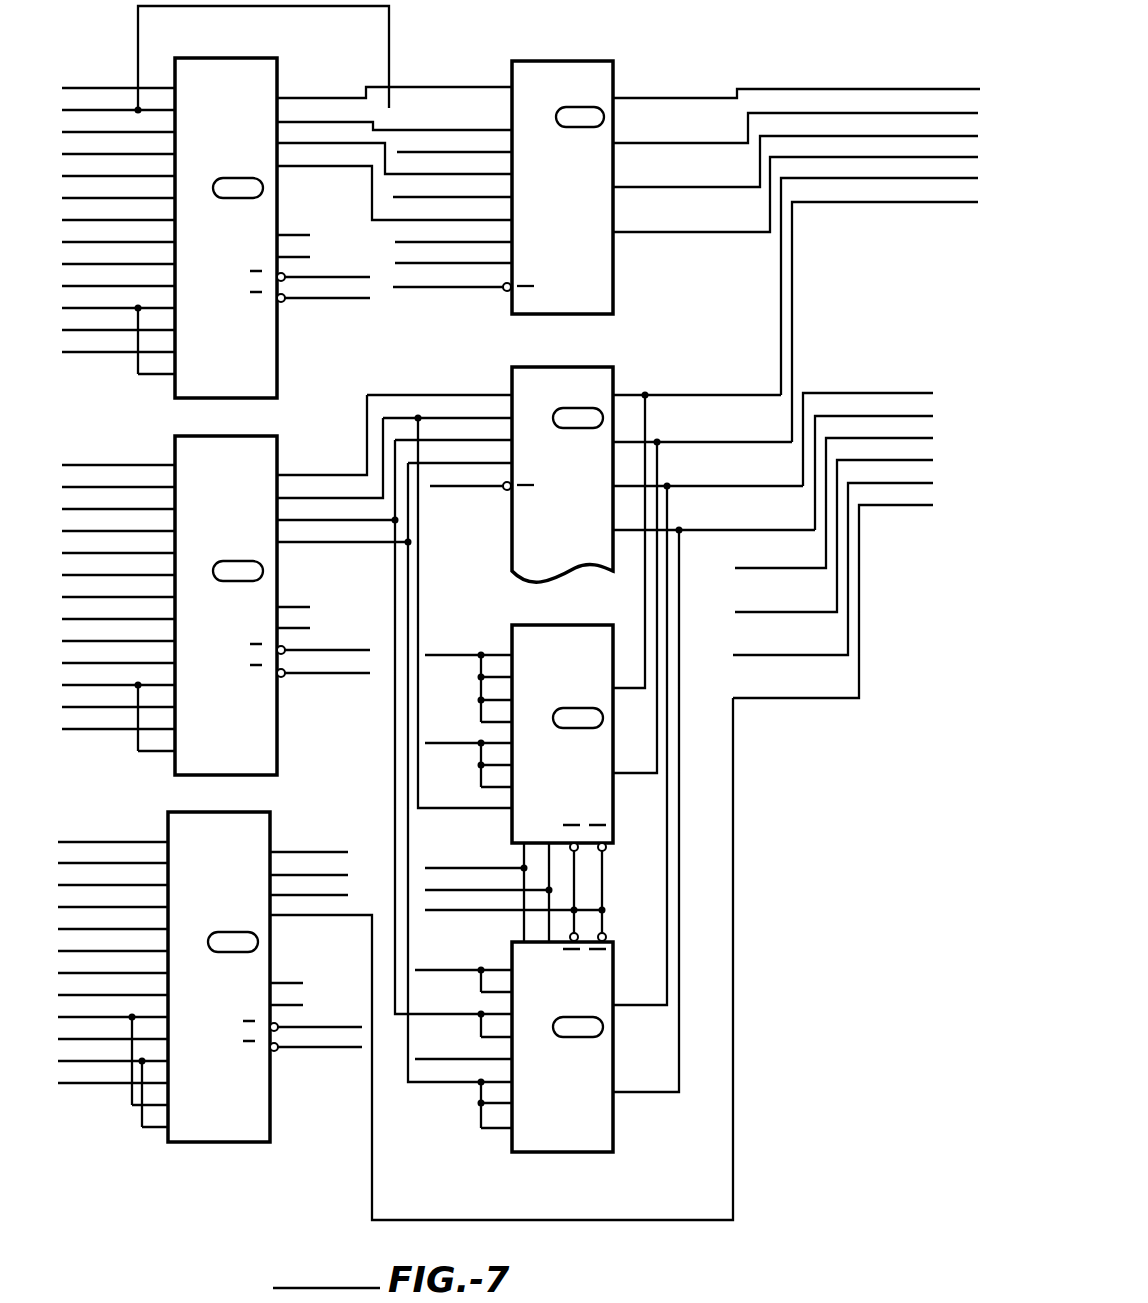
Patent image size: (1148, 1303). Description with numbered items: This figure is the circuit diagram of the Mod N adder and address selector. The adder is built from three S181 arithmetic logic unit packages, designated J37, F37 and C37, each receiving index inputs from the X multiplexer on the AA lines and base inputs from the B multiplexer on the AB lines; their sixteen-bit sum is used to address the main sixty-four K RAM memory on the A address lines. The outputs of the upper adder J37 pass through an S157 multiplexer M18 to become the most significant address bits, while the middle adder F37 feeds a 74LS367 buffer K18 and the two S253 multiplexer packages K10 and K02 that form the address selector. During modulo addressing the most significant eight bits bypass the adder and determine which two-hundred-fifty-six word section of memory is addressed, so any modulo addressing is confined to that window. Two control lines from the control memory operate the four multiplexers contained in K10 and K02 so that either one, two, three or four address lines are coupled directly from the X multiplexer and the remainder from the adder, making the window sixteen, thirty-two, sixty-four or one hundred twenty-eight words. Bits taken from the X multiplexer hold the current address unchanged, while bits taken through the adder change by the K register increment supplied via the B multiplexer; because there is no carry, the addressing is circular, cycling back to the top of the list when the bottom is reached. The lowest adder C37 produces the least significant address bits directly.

The S181 arithmetic logic unit (mod N adder) S181 is at (285, 601).
The S157 multiplexer S157 is at (684, 237).
The 74LS367 buffer 74LS367 is at (601, 779).
The S253 address selector multiplexer S253 is at (542, 900).
The adder J37 is at (238, 187).
The adder F37 is at (238, 570).
The adder C37 is at (233, 941).
The multiplexer M18 is at (580, 116).
The 74LS367 chip designator K18 is at (578, 417).
The multiplexer K10 is at (578, 717).
The multiplexer K02 is at (578, 1026).